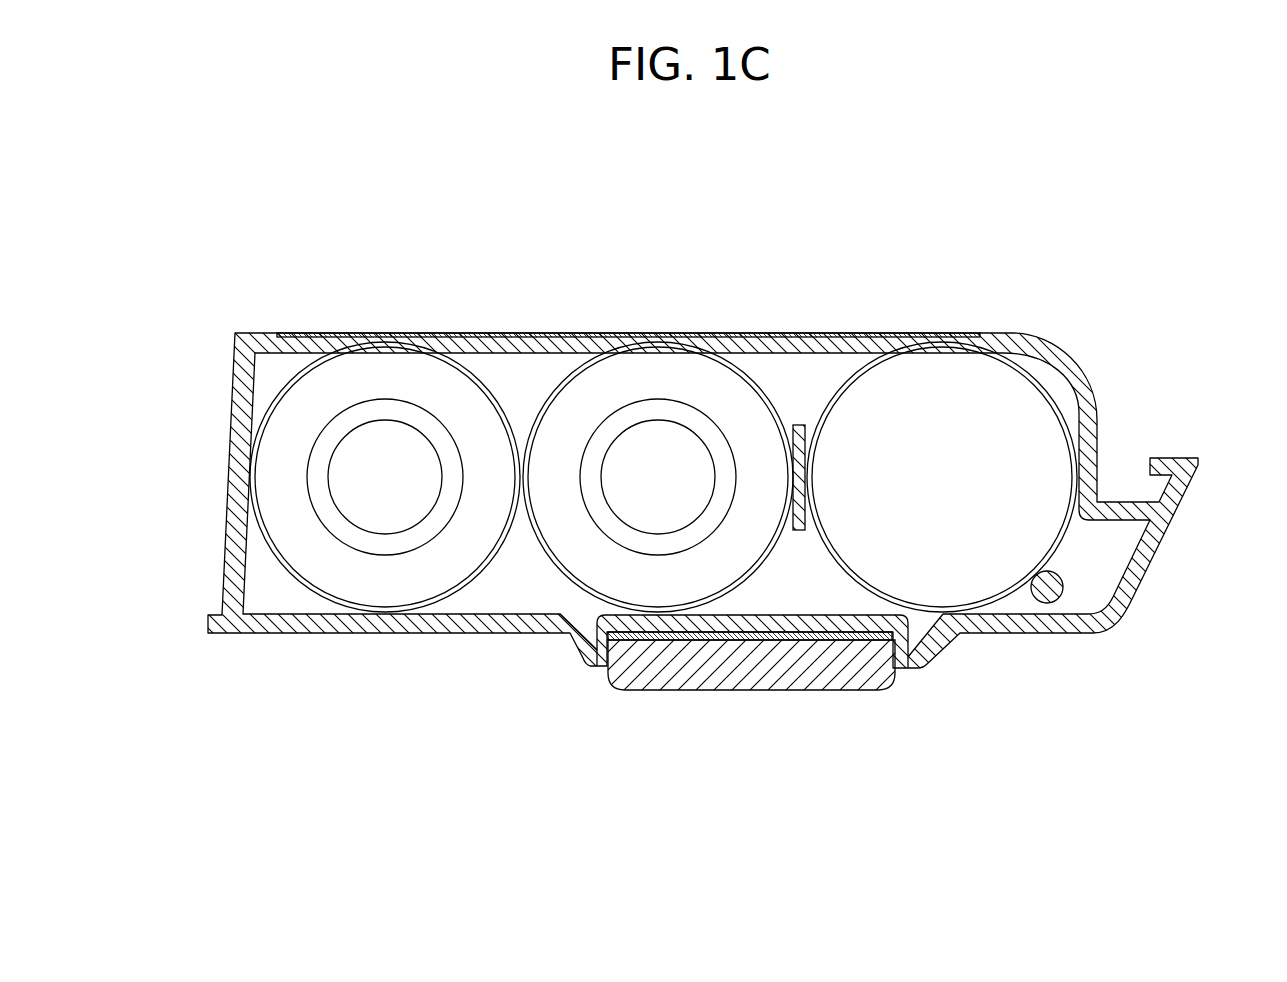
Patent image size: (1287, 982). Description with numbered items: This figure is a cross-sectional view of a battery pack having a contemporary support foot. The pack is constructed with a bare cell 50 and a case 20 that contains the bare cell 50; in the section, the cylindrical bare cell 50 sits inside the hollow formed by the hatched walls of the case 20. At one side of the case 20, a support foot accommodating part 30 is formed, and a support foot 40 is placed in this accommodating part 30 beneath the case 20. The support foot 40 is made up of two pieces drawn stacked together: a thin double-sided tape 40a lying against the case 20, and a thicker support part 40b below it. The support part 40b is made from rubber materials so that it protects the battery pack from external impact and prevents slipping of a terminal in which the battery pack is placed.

The case 20 is at (1145, 563).
The support foot accommodating part 30 is at (595, 660).
The support foot 40 is at (751, 728).
The double-sided tape 40a is at (747, 633).
The support part 40b is at (712, 675).
The bare cell 50 is at (275, 465).